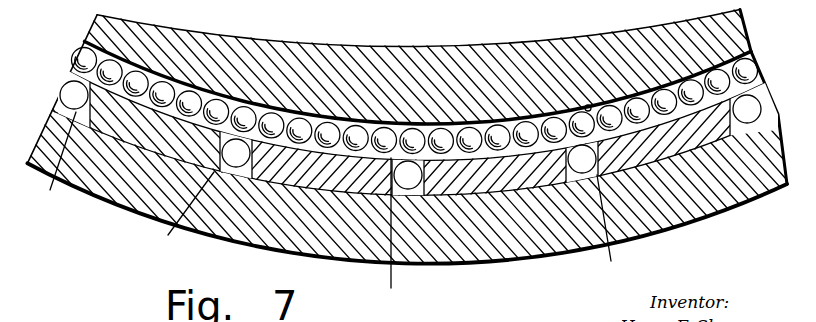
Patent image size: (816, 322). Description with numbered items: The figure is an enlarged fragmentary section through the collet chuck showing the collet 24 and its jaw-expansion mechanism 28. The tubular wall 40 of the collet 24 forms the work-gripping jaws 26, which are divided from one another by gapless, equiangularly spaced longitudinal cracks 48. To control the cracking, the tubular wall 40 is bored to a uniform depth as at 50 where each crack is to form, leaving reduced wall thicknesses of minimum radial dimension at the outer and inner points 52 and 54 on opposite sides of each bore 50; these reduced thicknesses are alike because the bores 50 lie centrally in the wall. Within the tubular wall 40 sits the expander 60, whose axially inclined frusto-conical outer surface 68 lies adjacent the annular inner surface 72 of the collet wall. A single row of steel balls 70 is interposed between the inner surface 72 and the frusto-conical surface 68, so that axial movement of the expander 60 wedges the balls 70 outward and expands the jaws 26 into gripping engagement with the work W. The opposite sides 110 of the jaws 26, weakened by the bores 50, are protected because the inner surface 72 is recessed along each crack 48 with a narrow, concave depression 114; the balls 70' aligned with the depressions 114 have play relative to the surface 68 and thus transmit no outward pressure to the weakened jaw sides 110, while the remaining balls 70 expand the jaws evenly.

The collet 24 is at (91, 196).
The expansible jaws 26 is at (158, 170).
The jaw-expansion mechanism 28 is at (490, 52).
The tubular wall 40 is at (248, 233).
The longitudinal cracks 48 is at (760, 122).
The longitudinal bores 50 is at (428, 195).
The reduced outer wall thickness 52 is at (392, 9).
The reduced inner wall thickness 54 is at (427, 9).
The expander 60 is at (628, 38).
The frusto-conical surface 68 is at (587, 104).
The steel balls 70 is at (415, 77).
The steel balls aligned with depressions 70' is at (410, 97).
The inner surface of tubular collet wall 72 is at (273, 240).
The jaw sides 110 is at (330, 207).
The depressions 114 is at (161, 80).
The work W is at (547, 257).